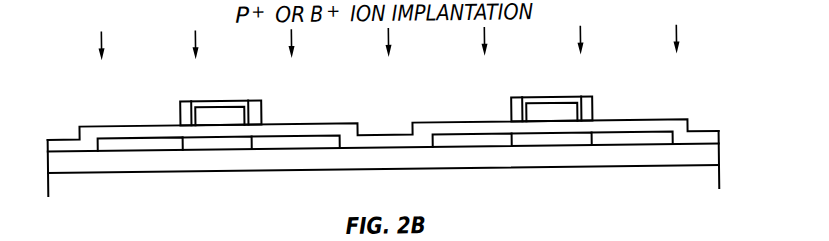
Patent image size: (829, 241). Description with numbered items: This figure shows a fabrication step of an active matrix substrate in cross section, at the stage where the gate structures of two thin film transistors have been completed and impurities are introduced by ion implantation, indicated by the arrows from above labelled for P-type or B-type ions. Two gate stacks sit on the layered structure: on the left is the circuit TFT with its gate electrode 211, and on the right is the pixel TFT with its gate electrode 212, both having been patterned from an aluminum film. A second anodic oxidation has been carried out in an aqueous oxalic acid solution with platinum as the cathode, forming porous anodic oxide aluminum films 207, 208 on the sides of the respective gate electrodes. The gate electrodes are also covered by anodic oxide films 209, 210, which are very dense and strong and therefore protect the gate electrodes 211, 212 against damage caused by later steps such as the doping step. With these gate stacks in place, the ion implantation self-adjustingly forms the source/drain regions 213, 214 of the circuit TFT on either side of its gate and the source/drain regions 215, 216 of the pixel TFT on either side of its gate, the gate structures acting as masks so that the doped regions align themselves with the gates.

The porous anodic oxide aluminum film 207 is at (255, 112).
The porous anodic oxide aluminum film 208 is at (587, 116).
The anodic oxide film 209 is at (193, 105).
The anodic oxide film 210 is at (527, 103).
The gate electrode 211 is at (210, 120).
The gate electrode 212 is at (553, 121).
The source/drain region 213 is at (122, 146).
The source/drain region 214 is at (308, 146).
The source/drain region 215 is at (452, 147).
The source/drain region 216 is at (637, 145).